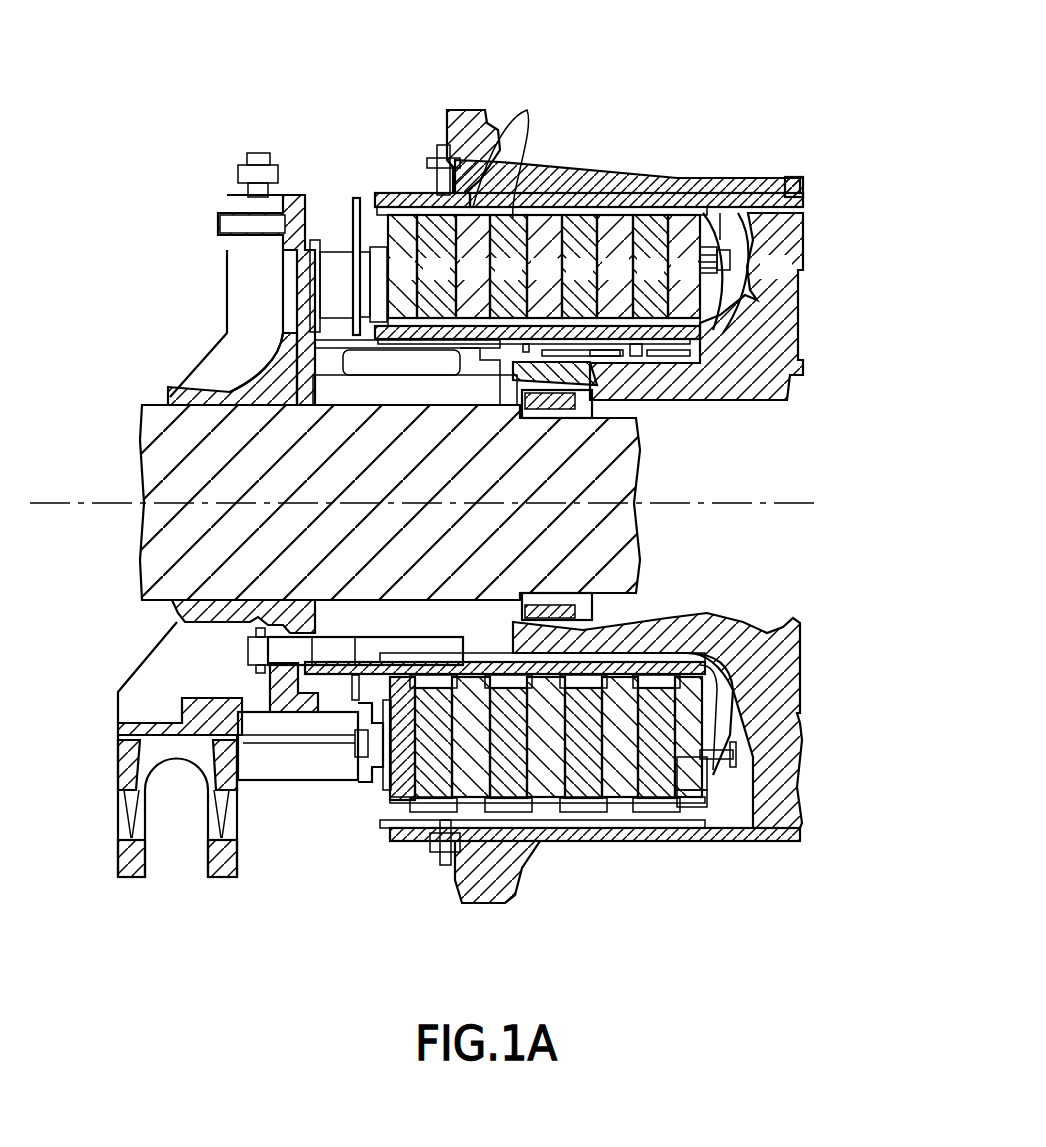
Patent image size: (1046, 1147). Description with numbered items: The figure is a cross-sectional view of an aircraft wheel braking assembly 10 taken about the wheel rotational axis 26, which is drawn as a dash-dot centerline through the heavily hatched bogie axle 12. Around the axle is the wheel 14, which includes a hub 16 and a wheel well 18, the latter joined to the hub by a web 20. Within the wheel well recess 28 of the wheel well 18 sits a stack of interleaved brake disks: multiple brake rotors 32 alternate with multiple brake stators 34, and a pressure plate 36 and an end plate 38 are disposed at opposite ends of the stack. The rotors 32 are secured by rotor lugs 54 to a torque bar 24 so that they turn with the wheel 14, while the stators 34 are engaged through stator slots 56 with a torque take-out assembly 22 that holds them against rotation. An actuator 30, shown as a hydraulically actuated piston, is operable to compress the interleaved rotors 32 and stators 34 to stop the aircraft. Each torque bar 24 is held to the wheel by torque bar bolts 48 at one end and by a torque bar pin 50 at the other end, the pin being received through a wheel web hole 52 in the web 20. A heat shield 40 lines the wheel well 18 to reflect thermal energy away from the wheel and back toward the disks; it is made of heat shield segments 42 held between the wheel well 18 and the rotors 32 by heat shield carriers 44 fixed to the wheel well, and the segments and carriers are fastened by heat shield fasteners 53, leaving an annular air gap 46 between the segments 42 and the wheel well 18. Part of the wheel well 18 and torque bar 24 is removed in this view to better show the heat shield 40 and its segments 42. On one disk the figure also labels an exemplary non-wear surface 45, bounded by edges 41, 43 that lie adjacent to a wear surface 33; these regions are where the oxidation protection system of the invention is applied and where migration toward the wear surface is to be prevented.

The aircraft wheel braking assembly 10 is at (828, 112).
The bogie axle 12 is at (118, 455).
The wheel 14 is at (655, 155).
The hub 16 is at (620, 395).
The wheel well 18 is at (800, 182).
The web 20 is at (780, 713).
The torque take-out assembly 22 is at (437, 365).
The torque bar 24 is at (386, 193).
The wheel rotational axis 26 is at (695, 503).
The wheel well recess 28 is at (745, 290).
The actuator 30 is at (292, 815).
The brake rotor 32 is at (545, 513).
The wear surface 33 is at (705, 318).
The brake stator 34 is at (545, 506).
The pressure plate 36 is at (402, 266).
The end plate 38 is at (687, 511).
The heat shield 40 is at (400, 862).
The edge 41 is at (652, 318).
The heat shield segment 42 is at (578, 185).
The edge 43 is at (688, 318).
The heat shield carrier 44 is at (460, 860).
The non-wear surface 45 is at (670, 318).
The air gap 46 is at (490, 112).
The torque bar bolt 48 is at (437, 170).
The torque bar pin 50 is at (735, 215).
The wheel web hole 52 is at (803, 237).
The heat shield fastener 53 is at (445, 865).
The rotor lug 54 is at (509, 149).
The stator slot 56 is at (490, 355).